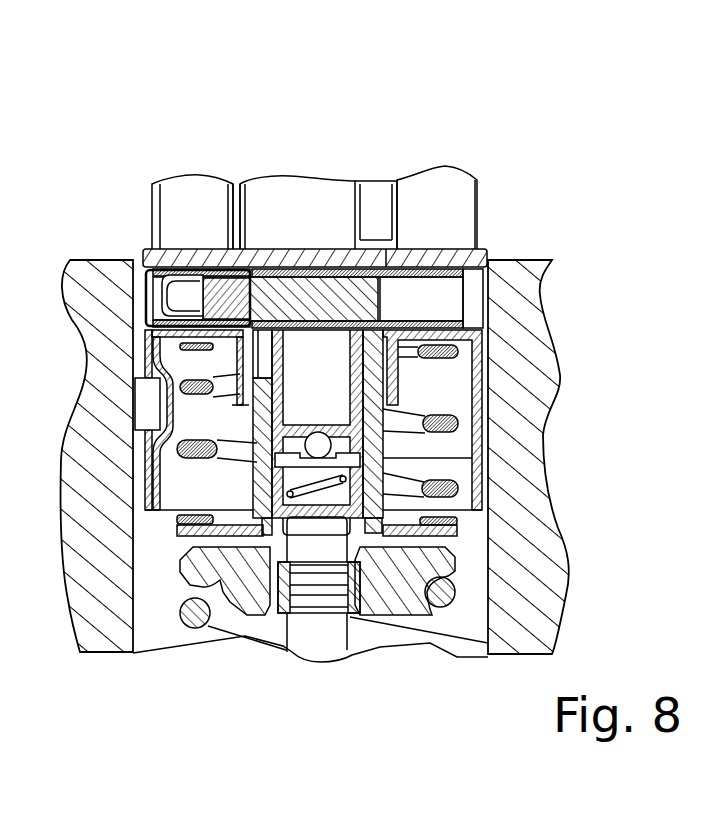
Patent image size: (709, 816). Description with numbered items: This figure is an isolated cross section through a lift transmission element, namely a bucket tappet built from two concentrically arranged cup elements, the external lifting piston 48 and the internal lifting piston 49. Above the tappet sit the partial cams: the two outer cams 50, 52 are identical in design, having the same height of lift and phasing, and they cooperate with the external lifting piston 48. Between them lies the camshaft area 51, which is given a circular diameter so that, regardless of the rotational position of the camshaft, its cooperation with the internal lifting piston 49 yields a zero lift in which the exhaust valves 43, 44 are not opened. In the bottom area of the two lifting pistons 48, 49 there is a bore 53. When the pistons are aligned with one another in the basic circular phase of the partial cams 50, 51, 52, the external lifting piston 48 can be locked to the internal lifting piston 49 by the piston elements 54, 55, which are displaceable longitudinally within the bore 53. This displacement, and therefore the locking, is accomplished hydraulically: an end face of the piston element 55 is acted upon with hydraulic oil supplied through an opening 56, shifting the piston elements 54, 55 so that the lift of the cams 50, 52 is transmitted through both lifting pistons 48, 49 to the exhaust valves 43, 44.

The exhaust valve 43 is at (312, 626).
The exhaust valve 44 is at (319, 587).
The external lifting piston 48 is at (488, 250).
The internal lifting piston 49 is at (261, 246).
The cam 50 is at (168, 186).
The camshaft area 51 is at (337, 186).
The cam 52 is at (443, 186).
The bore 53 is at (477, 281).
The piston element 54 is at (274, 296).
The piston element 55 is at (238, 296).
The opening 56 is at (174, 291).